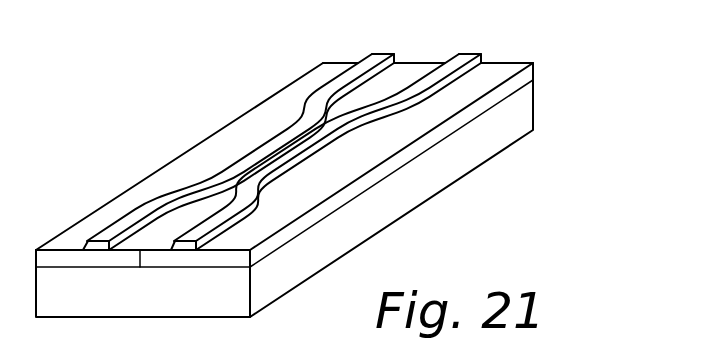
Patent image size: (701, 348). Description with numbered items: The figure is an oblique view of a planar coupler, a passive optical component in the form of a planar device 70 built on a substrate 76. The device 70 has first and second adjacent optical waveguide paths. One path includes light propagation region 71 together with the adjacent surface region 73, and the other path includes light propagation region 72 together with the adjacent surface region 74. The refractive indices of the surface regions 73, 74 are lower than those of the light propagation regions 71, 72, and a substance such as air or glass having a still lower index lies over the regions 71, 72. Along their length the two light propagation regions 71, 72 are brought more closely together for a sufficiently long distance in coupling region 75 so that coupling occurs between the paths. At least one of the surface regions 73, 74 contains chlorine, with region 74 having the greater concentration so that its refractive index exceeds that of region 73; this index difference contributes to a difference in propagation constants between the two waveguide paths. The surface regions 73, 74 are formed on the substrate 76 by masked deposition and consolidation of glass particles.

The planar device 70 is at (135, 185).
The light propagation region 71 is at (113, 230).
The light propagation region 72 is at (484, 57).
The surface region 73 is at (79, 256).
The surface region 74 is at (190, 256).
The coupling region 75 is at (269, 159).
The substrate 76 is at (465, 160).